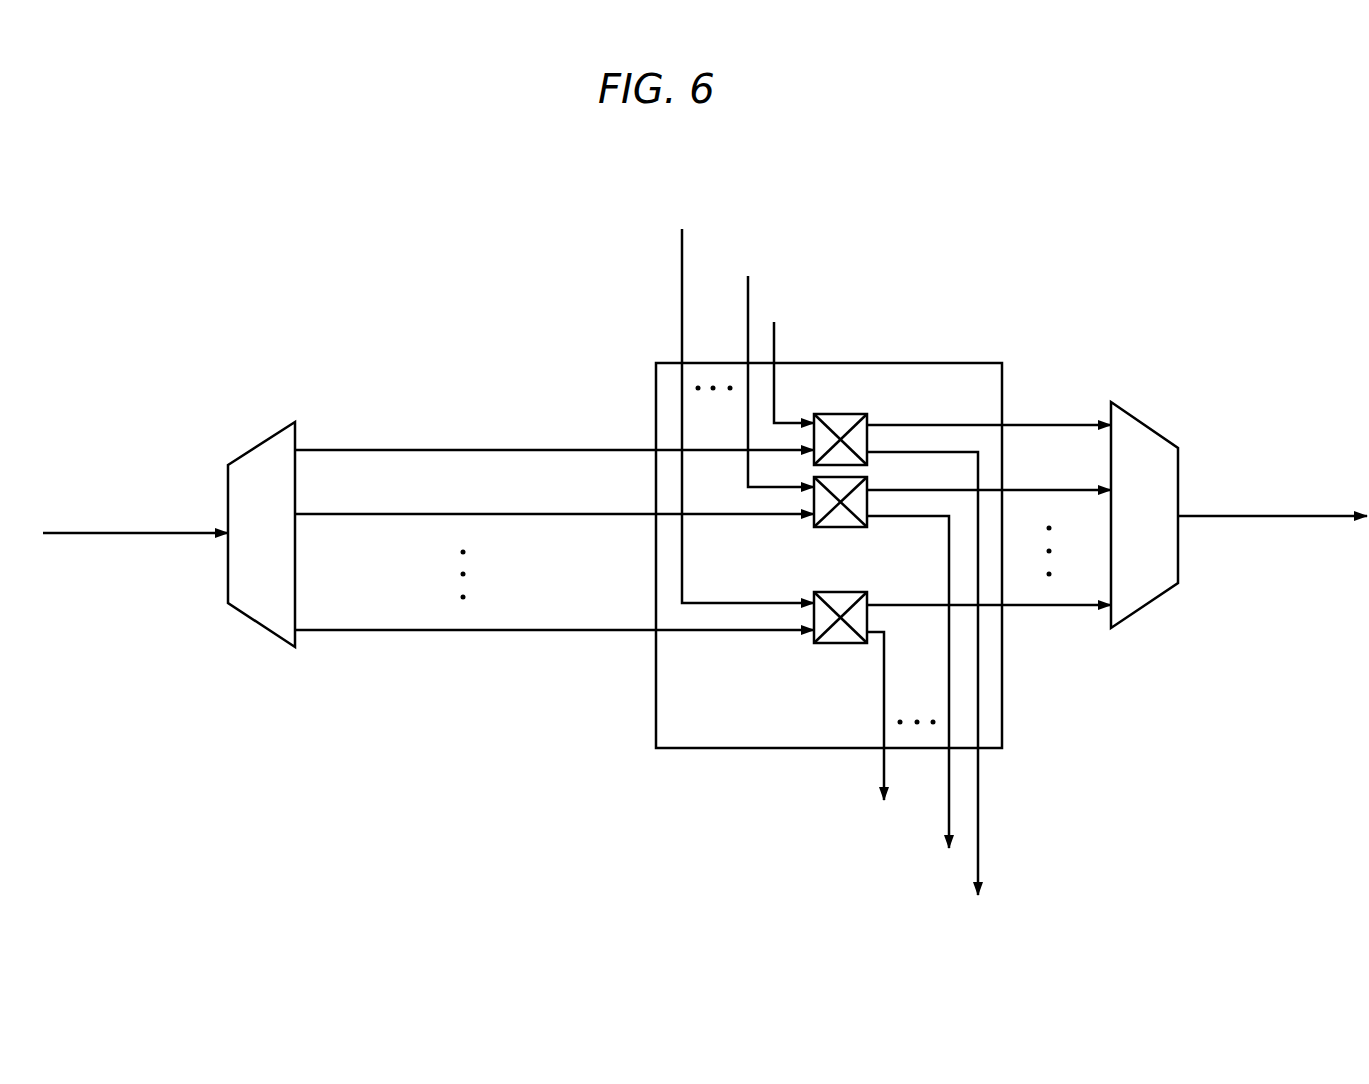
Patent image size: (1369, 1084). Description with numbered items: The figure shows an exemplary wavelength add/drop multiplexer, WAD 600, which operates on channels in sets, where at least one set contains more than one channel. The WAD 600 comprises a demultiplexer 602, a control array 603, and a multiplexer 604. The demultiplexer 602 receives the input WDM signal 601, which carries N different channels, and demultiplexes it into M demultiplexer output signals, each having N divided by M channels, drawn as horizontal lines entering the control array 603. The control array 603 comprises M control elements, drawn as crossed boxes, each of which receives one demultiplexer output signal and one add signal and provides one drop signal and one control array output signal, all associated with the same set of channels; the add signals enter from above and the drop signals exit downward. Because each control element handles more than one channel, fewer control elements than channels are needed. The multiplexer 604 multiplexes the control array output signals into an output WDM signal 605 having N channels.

The wavelength add/drop multiplexer 600 is at (694, 152).
The input WDM signal 601 is at (127, 537).
The demultiplexer 602 is at (257, 627).
The control array 603 is at (848, 413).
The multiplexer 604 is at (1140, 610).
The output WDM signal 605 is at (1258, 522).